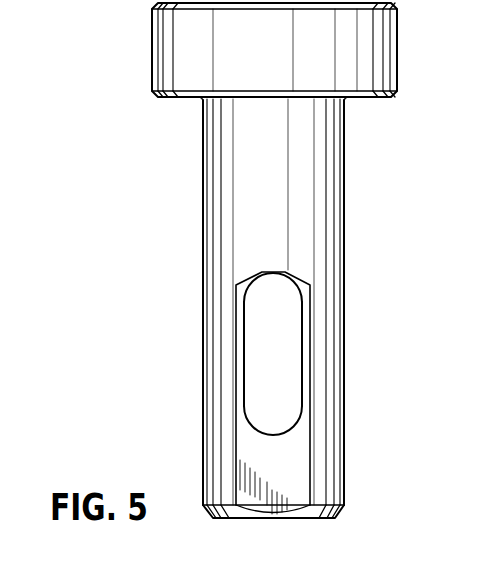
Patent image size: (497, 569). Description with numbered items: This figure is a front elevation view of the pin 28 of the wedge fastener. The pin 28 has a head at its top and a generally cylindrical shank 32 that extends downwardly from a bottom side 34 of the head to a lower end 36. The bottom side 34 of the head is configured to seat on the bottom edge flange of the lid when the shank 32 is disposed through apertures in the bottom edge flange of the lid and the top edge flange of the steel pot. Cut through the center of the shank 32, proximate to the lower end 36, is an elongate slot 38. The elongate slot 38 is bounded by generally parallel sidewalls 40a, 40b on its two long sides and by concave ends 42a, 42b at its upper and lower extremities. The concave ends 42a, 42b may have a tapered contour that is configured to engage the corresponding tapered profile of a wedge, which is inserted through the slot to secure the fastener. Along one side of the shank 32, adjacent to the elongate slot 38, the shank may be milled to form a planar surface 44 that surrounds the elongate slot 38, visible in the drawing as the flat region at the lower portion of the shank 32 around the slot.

The pin 28 is at (131, 48).
The shank 32 is at (346, 184).
The bottom side 34 is at (172, 96).
The lower end 36 is at (318, 518).
The elongate slot 38 is at (235, 316).
The sidewall 40a is at (247, 382).
The sidewall 40b is at (301, 351).
The concave end 42a is at (274, 274).
The concave end 42b is at (272, 436).
The planar surface 44 is at (297, 493).